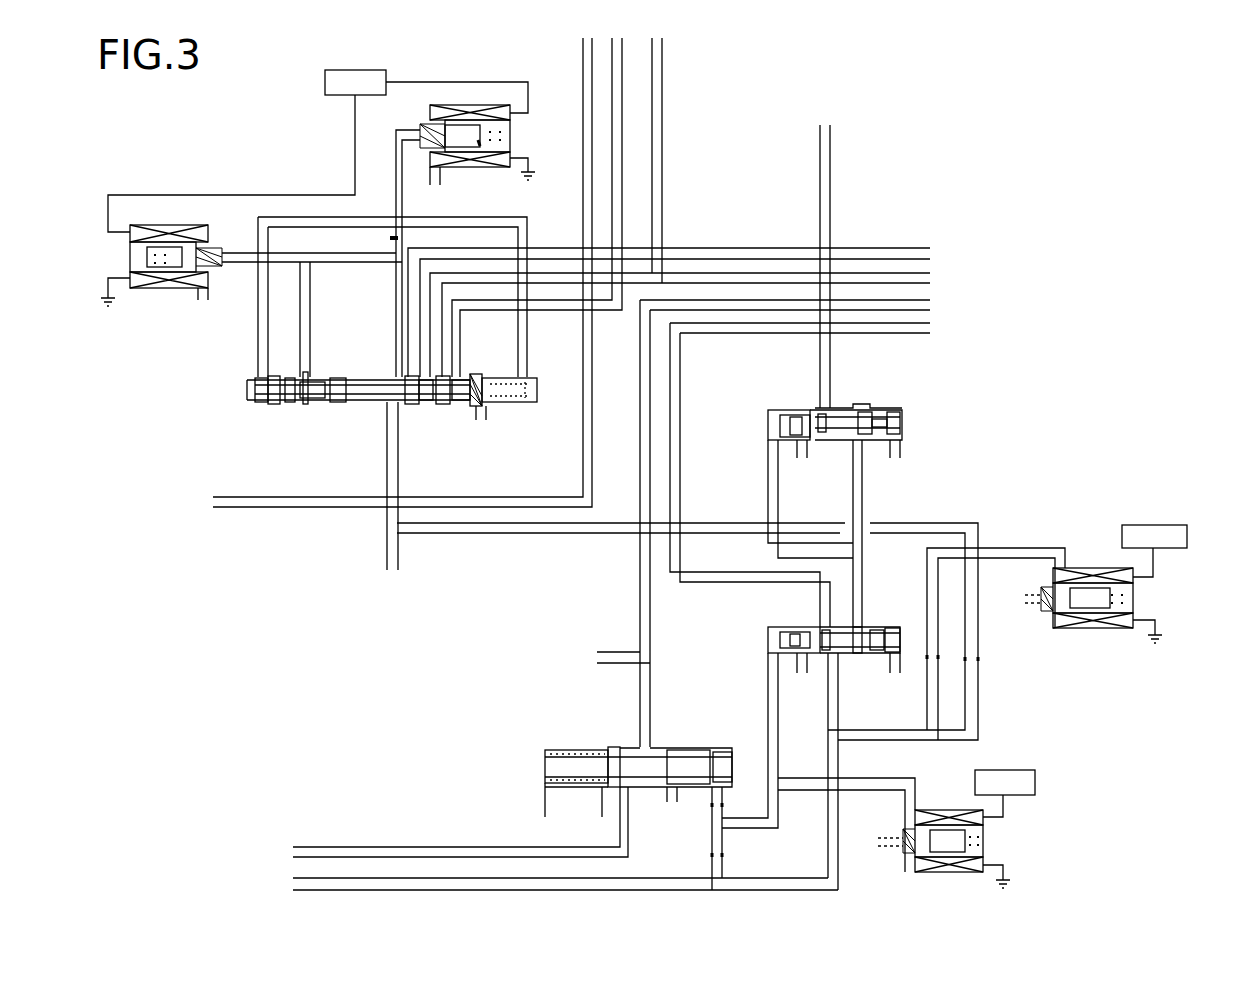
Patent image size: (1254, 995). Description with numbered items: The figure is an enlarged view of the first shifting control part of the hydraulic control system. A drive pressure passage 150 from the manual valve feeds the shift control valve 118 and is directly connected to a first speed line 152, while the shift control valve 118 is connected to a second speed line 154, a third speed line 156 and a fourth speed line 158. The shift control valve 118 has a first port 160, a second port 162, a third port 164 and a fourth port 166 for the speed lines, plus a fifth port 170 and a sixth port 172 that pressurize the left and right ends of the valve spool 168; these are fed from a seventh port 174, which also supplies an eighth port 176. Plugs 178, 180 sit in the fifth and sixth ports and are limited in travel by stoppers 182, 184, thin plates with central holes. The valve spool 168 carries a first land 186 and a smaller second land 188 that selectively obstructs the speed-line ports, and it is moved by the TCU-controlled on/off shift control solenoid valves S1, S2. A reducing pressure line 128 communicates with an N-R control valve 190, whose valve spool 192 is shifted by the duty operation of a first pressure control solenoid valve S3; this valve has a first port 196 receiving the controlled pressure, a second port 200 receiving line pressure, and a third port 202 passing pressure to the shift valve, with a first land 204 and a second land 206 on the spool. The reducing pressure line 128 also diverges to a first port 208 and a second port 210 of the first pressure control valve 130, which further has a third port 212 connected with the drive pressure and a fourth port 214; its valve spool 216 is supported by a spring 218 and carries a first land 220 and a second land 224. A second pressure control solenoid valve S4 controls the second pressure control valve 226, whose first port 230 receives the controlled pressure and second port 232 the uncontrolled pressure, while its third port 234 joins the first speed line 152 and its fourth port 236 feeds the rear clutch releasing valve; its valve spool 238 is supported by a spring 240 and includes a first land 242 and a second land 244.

The shift control valve 118 is at (375, 372).
The reducing pressure line 128 is at (667, 878).
The first pressure control valve 130 is at (805, 630).
The drive pressure passage 150 is at (398, 463).
The first speed line 152 is at (520, 533).
The second speed line 154 is at (556, 255).
The third speed line 156 is at (553, 280).
The fourth speed line 158 is at (490, 300).
The first port 160 is at (380, 412).
The second port 162 is at (426, 380).
The third port 164 is at (412, 376).
The fourth port 166 is at (478, 368).
The valve spool 168 is at (355, 405).
The fifth port 170 is at (258, 378).
The sixth port 172 is at (528, 378).
The seventh port 174 is at (440, 376).
The eighth port 176 is at (306, 372).
The plug 178 is at (275, 404).
The plug 180 is at (495, 405).
The stopper 182 is at (290, 385).
The stopper 184 is at (500, 408).
The first land 186 is at (338, 404).
The second land 188 is at (450, 404).
The N-R control valve 190 is at (541, 795).
The valve spool 192 is at (568, 755).
The first port 196 is at (718, 790).
The second port 200 is at (624, 792).
The third port 202 is at (652, 742).
The first land 204 is at (700, 752).
The second land 206 is at (612, 748).
The first port 208 is at (770, 660).
The second port 210 is at (875, 660).
The third port 212 is at (855, 624).
The fourth port 214 is at (822, 627).
The valve spool 216 is at (837, 653).
The spring 218 is at (770, 648).
The first land 220 is at (790, 632).
The second land 224 is at (878, 628).
The second pressure control valve 226 is at (868, 418).
The first port 230 is at (768, 450).
The second port 232 is at (880, 440).
The third port 234 is at (852, 445).
The fourth port 236 is at (828, 410).
The valve spool 238 is at (888, 428).
The spring 240 is at (770, 418).
The first land 242 is at (794, 416).
The second land 244 is at (868, 412).
The shift control solenoid valve S1 is at (482, 92).
The shift control solenoid valve S2 is at (167, 304).
The first pressure control solenoid valve S3 is at (1006, 846).
The second pressure control solenoid valve S4 is at (1155, 604).